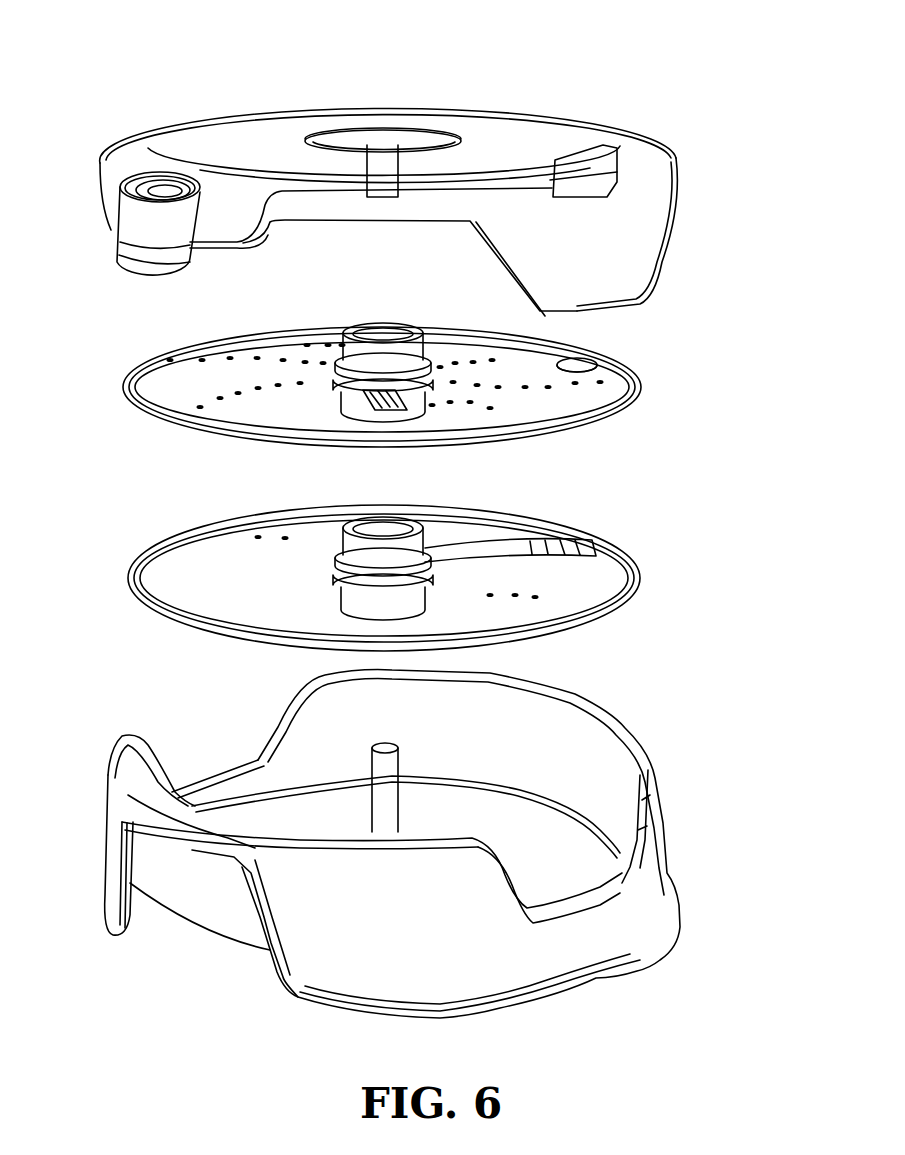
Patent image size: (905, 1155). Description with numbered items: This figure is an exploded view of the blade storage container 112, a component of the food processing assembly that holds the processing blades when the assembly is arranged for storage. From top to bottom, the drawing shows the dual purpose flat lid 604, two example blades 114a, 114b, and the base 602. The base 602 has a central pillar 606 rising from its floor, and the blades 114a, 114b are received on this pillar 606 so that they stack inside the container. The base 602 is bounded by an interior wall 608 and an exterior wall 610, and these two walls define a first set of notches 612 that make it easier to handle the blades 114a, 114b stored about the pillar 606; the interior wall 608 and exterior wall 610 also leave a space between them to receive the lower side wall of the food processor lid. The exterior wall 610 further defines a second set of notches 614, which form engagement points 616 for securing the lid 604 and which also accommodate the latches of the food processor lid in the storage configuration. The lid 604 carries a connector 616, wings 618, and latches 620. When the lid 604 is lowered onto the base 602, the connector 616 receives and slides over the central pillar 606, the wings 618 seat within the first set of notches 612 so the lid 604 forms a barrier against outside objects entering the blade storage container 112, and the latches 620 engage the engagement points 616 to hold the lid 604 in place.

The blade storage container 112 is at (152, 38).
The lid 604 is at (648, 133).
The wings 618 is at (648, 242).
The latches 620 is at (135, 258).
The connector 616 is at (380, 192).
The blade 114a is at (641, 384).
The blade 114b is at (640, 578).
The base 602 is at (387, 844).
The first set of notches 612 is at (208, 738).
The exterior wall 610 is at (108, 803).
The second set of notches 614 is at (145, 888).
The central pillar 606 is at (390, 817).
The interior wall 608 is at (210, 907).